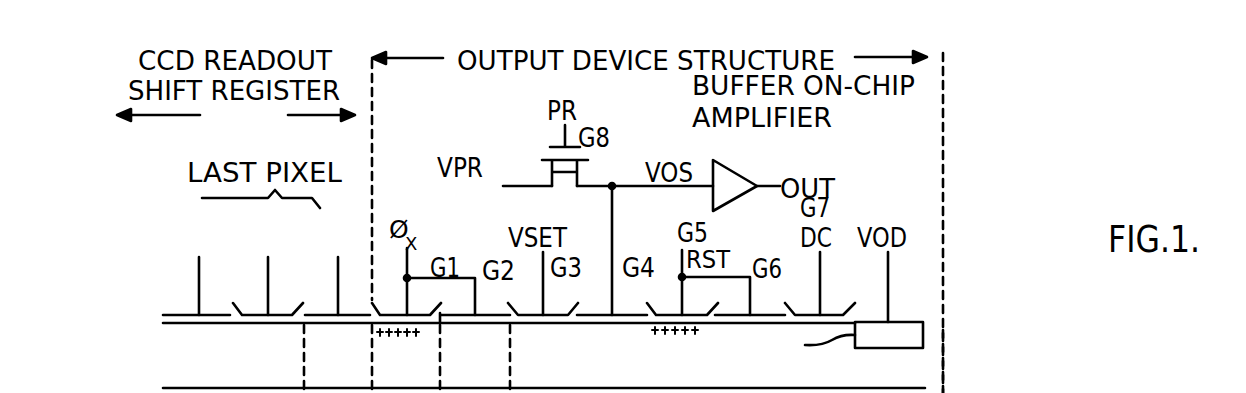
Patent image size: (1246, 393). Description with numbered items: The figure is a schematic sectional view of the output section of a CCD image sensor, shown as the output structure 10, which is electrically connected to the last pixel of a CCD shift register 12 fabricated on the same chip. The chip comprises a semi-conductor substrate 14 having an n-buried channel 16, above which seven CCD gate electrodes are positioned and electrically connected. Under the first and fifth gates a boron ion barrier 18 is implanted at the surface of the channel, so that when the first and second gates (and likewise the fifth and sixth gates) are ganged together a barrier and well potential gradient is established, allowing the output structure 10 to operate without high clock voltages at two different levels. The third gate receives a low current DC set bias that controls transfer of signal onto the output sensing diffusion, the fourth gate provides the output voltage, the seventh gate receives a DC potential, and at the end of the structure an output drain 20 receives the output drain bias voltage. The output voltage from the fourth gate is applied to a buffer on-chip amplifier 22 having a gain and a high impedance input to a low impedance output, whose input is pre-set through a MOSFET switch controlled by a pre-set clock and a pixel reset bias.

The output structure 10 is at (950, 118).
The CCD shift register 12 is at (178, 279).
The semi-conductor substrate 14 is at (928, 362).
The n-buried channel 16 is at (164, 388).
The boron ion barrier 18 is at (418, 342).
The output drain 20 is at (923, 335).
The buffer on-chip amplifier 22 is at (745, 168).